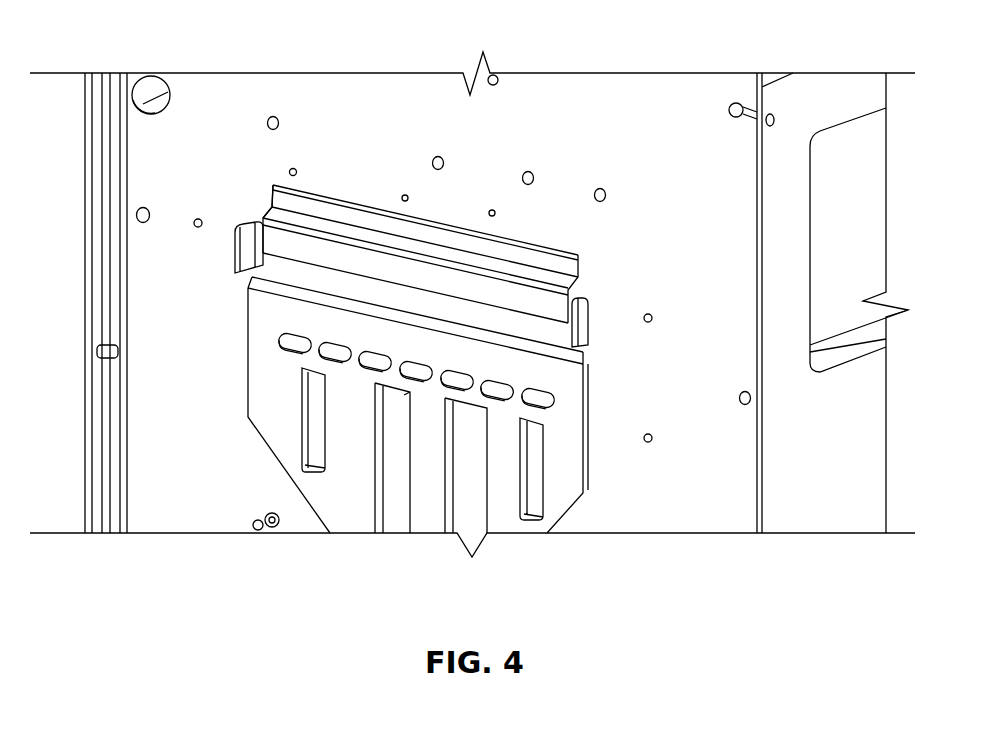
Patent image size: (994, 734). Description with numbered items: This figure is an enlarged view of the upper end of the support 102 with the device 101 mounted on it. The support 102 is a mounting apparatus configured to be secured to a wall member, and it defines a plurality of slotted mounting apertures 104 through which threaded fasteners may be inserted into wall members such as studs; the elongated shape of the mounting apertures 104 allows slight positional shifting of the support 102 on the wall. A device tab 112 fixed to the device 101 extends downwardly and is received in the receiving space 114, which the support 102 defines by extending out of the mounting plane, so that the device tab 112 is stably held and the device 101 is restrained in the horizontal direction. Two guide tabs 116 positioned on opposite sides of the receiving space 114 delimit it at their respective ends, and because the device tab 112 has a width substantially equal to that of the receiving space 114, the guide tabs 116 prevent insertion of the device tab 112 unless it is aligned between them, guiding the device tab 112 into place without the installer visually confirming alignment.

The device 101 is at (653, 523).
The support 102 is at (400, 523).
The mounting apertures 104 is at (418, 378).
The device tab 112 is at (517, 272).
The receiving space 114 is at (256, 214).
The guide tabs 116 is at (233, 256).